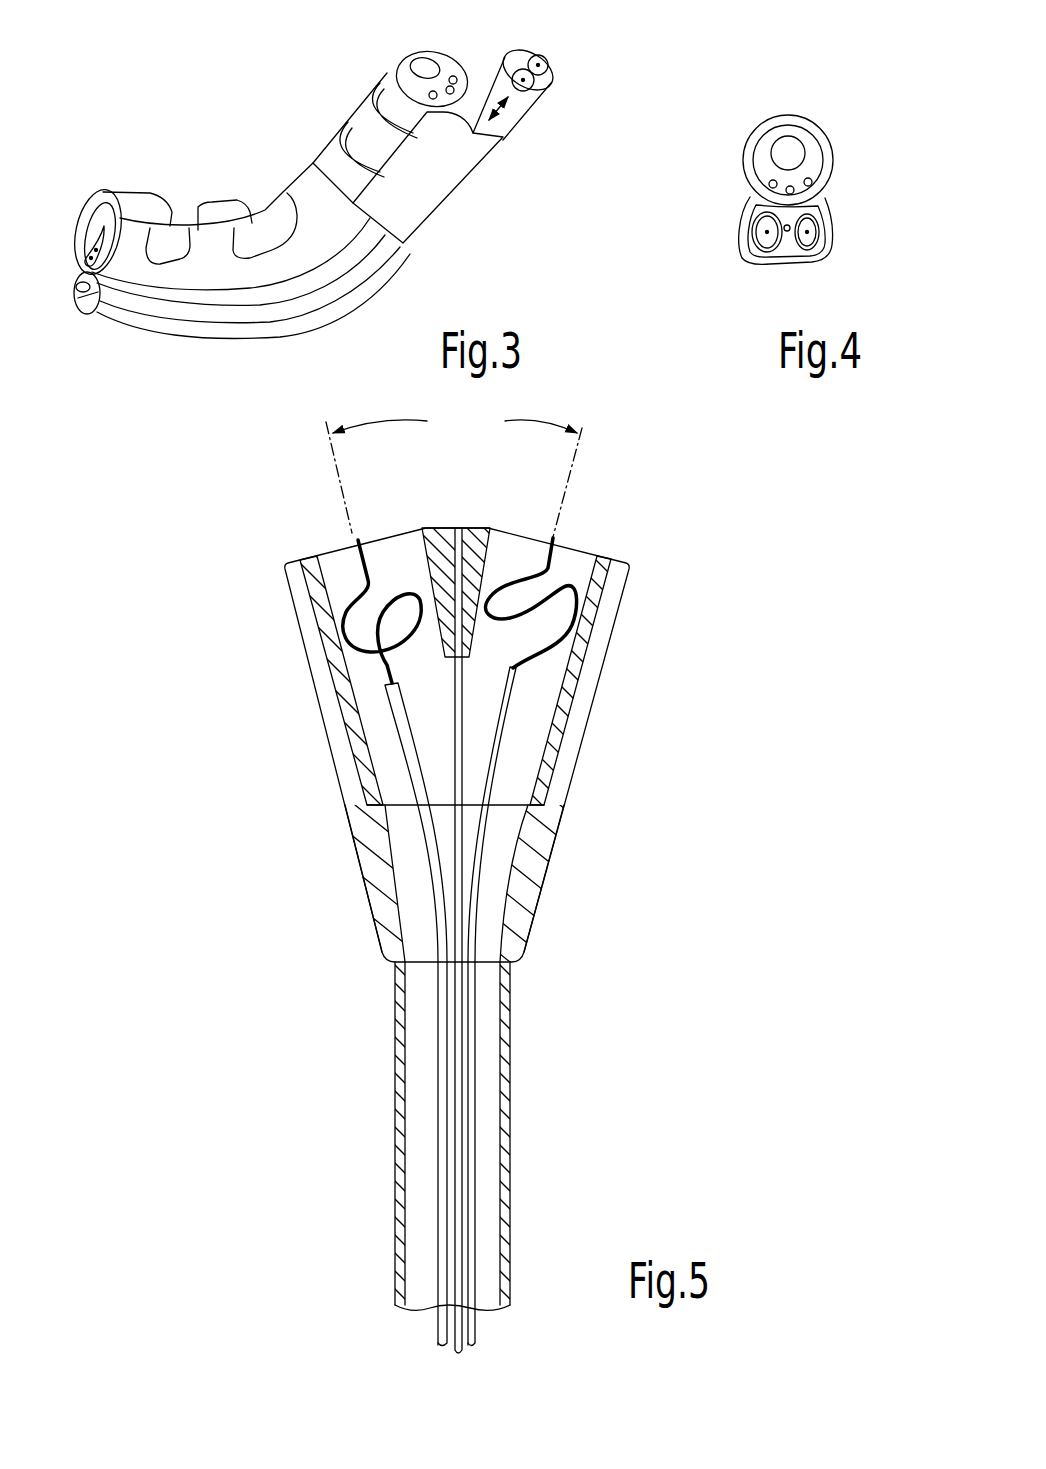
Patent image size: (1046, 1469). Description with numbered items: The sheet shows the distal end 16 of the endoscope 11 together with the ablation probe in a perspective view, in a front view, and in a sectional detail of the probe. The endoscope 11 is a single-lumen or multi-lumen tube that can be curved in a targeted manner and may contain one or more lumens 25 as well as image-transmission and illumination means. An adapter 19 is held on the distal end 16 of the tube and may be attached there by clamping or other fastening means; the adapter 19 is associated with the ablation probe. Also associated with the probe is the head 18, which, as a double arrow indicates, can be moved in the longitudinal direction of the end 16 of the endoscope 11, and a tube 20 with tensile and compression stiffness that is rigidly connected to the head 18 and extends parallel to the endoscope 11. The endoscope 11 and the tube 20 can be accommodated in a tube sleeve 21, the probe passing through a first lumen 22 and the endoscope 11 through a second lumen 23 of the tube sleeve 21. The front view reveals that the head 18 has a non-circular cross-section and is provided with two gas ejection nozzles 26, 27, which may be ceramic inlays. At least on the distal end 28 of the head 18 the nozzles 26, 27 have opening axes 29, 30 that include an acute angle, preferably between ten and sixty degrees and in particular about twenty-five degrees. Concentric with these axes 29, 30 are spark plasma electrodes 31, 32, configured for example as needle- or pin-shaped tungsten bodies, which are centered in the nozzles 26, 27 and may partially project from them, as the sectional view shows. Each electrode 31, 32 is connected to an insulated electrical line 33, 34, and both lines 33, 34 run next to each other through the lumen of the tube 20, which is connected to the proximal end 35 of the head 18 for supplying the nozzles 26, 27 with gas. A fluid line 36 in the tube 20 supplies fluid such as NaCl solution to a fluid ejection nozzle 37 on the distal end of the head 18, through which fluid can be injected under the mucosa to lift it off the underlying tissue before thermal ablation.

In FIG. 3, the endoscope 11 is at (338, 162).
In FIG. 4, the endoscope 11 is at (820, 130).
In FIG. 3, the distal end 16 is at (253, 108).
In FIG. 3, the head 18 is at (558, 98).
In FIG. 4, the head 18 is at (827, 217).
In FIG. 5, the head 18 is at (625, 667).
In FIG. 3, the adapter 19 is at (440, 185).
In FIG. 3, the tube 20 is at (273, 312).
In FIG. 5, the tube 20 is at (502, 1142).
In FIG. 3, the tube sleeve 21 is at (342, 306).
In FIG. 3, the first lumen 22 is at (80, 310).
In FIG. 3, the second lumen 23 is at (110, 190).
In FIG. 3, the lumen 25 is at (425, 62).
In FIG. 4, the lumen 25 is at (790, 160).
In FIG. 4, the gas ejection nozzle 26 is at (817, 250).
In FIG. 5, the gas ejection nozzle 26 is at (570, 690).
In FIG. 4, the gas ejection nozzle 27 is at (767, 247).
In FIG. 5, the gas ejection nozzle 27 is at (350, 718).
In FIG. 5, the distal end of the head 28 is at (640, 572).
In FIG. 5, the opening axis 29 is at (578, 458).
In FIG. 5, the opening axis 30 is at (343, 483).
In FIG. 5, the spark plasma electrode 31 is at (550, 528).
In FIG. 5, the spark plasma electrode 32 is at (368, 533).
In FIG. 5, the electrical line 33 is at (465, 1032).
In FIG. 5, the electrical line 34 is at (445, 1043).
In FIG. 5, the proximal end of the head 35 is at (543, 933).
In FIG. 5, the fluid line 36 is at (457, 1350).
In FIG. 5, the fluid ejection nozzle 37 is at (461, 513).